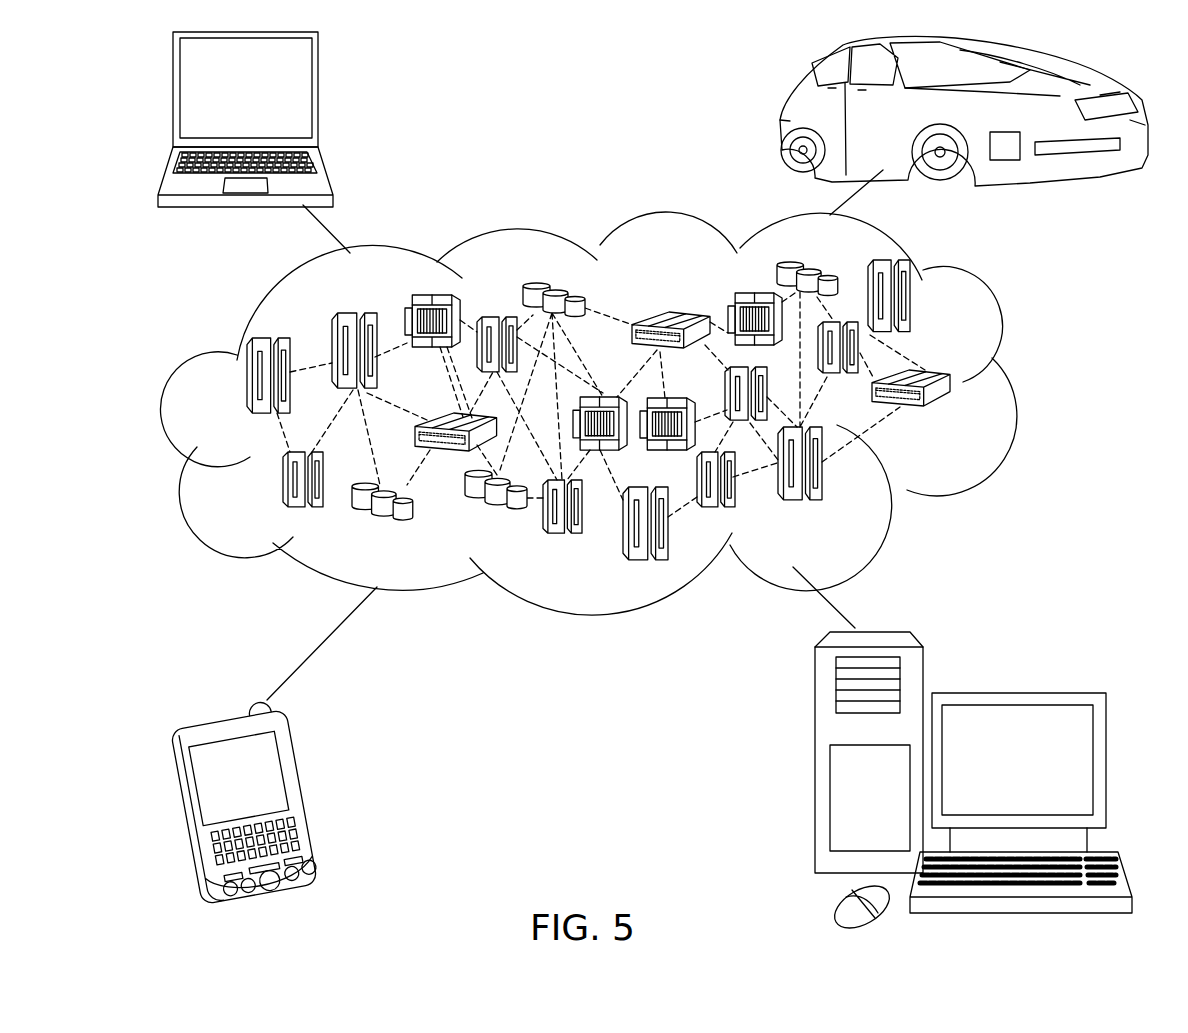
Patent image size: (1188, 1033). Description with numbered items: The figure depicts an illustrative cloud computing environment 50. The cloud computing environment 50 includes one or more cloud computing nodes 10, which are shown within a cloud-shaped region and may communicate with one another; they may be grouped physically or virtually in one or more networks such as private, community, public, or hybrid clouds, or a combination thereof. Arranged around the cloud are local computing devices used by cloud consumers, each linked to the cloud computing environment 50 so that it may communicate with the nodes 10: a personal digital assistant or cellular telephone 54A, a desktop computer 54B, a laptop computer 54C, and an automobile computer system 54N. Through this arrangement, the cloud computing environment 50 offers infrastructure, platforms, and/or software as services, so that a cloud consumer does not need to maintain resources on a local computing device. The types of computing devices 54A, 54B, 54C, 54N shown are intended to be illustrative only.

The cloud computing environment 50 is at (1015, 385).
The cloud computing nodes 10 is at (955, 420).
The personal digital assistant (PDA) or cellular telephone 54A is at (307, 790).
The desktop computer 54B is at (1015, 693).
The laptop computer 54C is at (318, 97).
The automobile computer system 54N is at (780, 113).